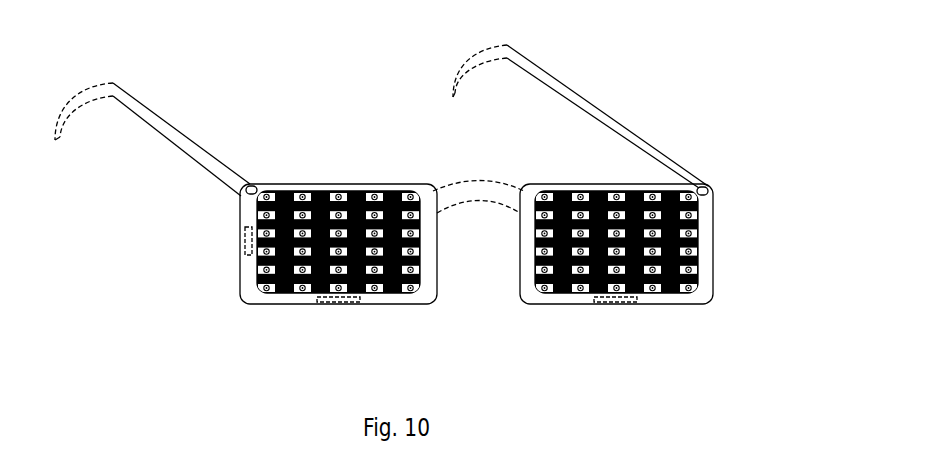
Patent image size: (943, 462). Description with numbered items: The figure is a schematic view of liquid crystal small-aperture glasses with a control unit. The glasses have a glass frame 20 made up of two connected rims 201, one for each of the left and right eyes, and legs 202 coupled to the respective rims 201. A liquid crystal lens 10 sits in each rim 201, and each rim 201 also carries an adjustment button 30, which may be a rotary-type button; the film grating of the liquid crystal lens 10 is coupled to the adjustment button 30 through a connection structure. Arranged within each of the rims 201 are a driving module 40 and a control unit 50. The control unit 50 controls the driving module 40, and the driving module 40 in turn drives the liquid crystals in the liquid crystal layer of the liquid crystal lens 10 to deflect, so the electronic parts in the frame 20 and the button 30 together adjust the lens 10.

The liquid crystal lens 10 is at (713, 262).
The glass frame 20 is at (434, 132).
The rim 201 is at (781, 130).
The leg 202 is at (632, 132).
The adjustment button 30 is at (254, 189).
The driving module 40 is at (348, 303).
The control unit 50 is at (245, 240).